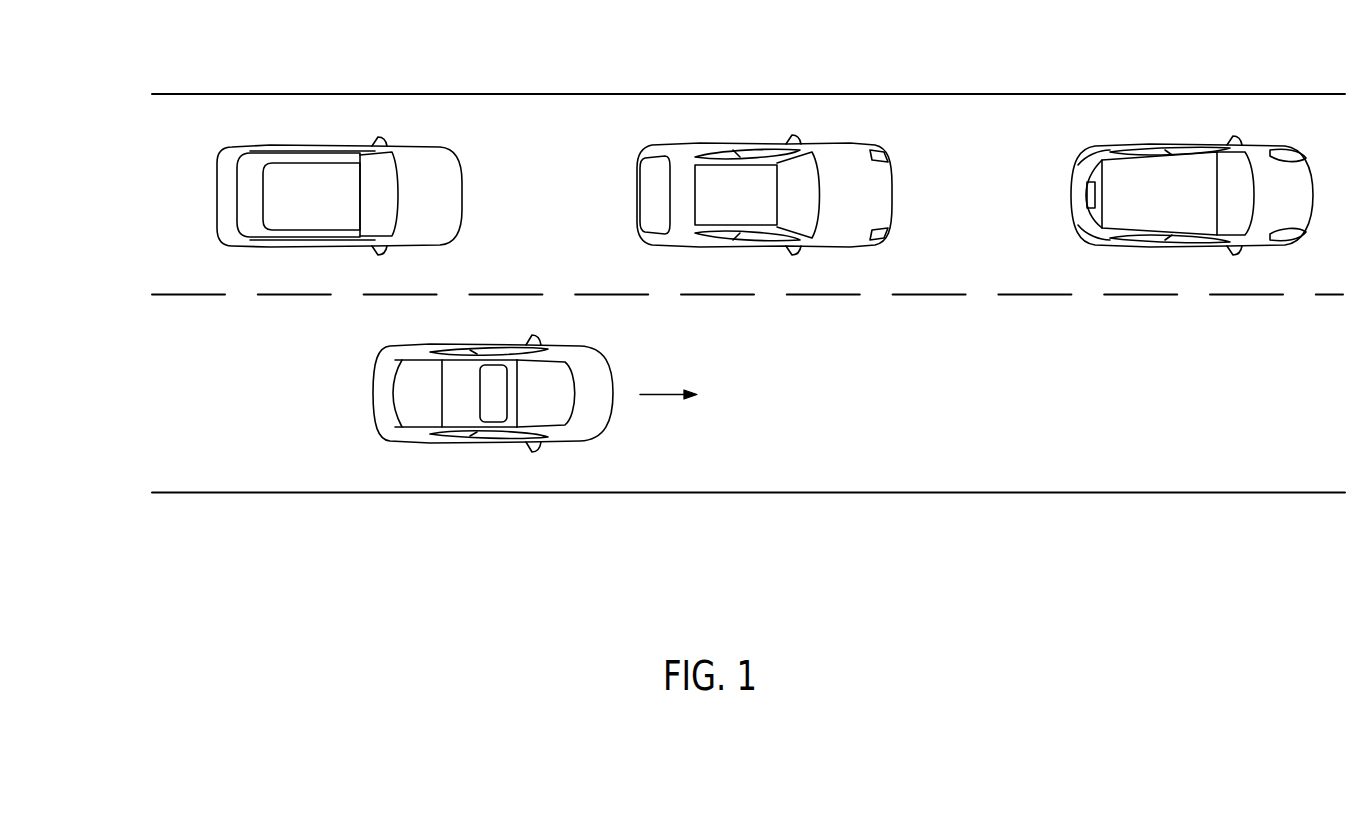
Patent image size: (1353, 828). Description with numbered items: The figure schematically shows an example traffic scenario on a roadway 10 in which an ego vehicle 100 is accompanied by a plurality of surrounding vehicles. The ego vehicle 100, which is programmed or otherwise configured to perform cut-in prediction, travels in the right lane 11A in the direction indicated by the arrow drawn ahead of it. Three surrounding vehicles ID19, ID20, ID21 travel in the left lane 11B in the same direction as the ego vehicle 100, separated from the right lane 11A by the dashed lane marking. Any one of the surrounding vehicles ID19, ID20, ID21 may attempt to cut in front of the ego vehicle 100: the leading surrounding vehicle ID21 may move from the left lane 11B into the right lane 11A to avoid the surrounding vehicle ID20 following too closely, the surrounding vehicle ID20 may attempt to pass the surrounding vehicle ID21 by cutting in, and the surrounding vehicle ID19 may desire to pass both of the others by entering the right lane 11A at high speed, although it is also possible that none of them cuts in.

The roadway 10 is at (647, 480).
The right lane 11A is at (163, 396).
The left lane 11B is at (163, 164).
The ego vehicle 100 is at (480, 463).
The surrounding vehicle ID19 is at (313, 142).
The surrounding vehicle ID20 is at (763, 140).
The surrounding vehicle ID21 is at (1183, 140).